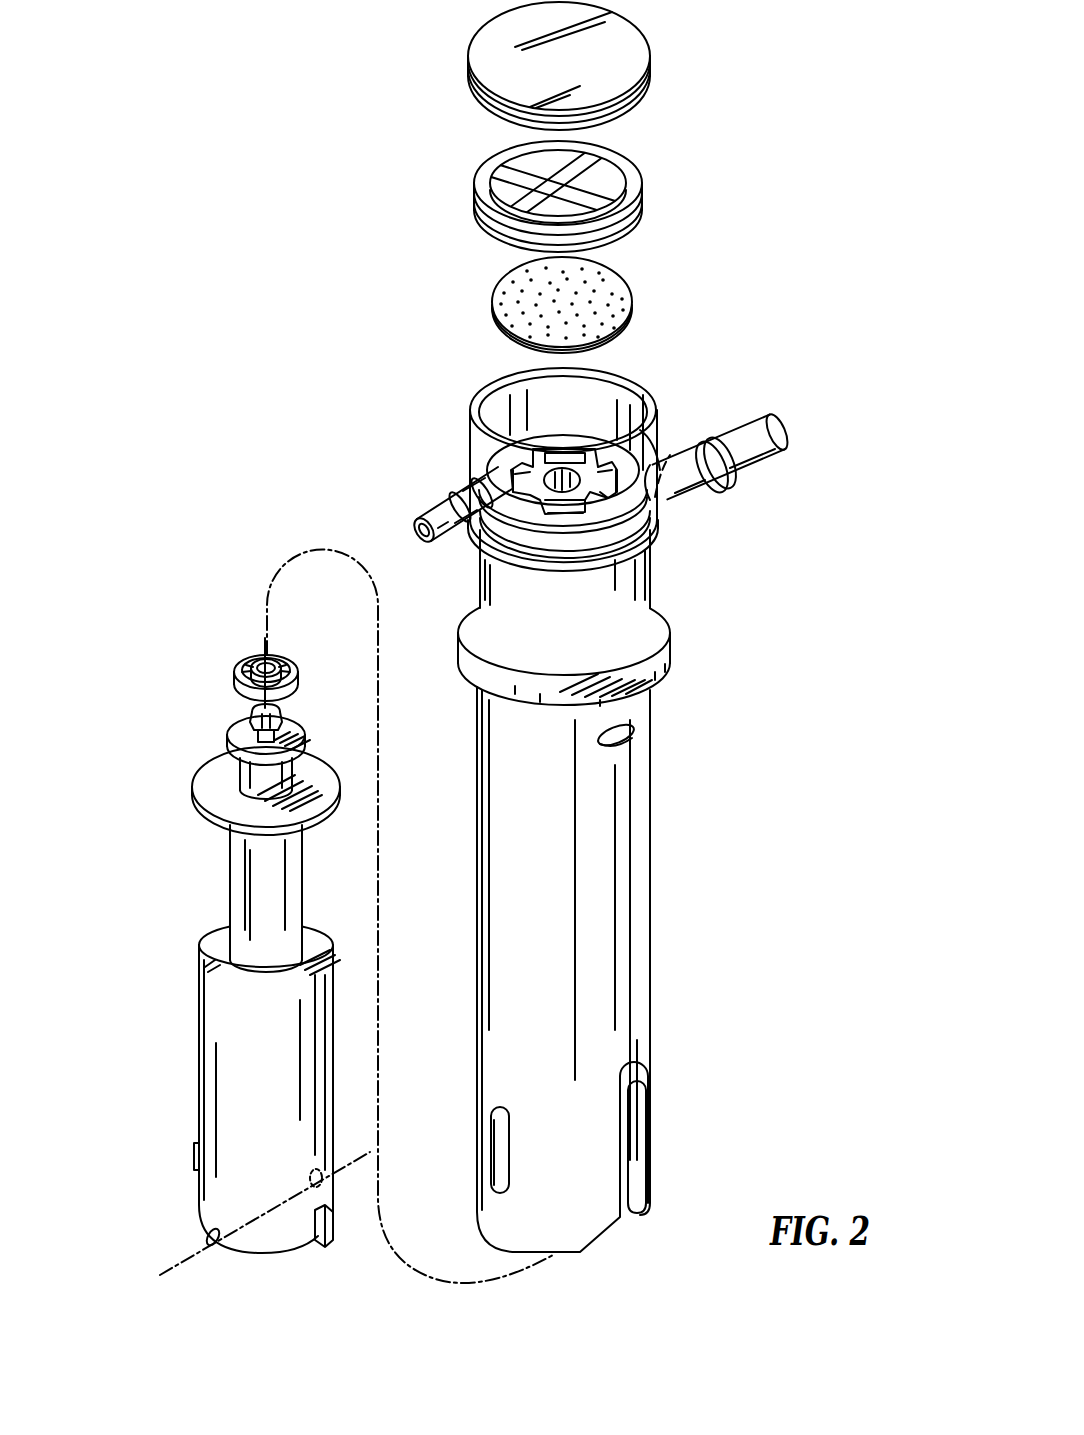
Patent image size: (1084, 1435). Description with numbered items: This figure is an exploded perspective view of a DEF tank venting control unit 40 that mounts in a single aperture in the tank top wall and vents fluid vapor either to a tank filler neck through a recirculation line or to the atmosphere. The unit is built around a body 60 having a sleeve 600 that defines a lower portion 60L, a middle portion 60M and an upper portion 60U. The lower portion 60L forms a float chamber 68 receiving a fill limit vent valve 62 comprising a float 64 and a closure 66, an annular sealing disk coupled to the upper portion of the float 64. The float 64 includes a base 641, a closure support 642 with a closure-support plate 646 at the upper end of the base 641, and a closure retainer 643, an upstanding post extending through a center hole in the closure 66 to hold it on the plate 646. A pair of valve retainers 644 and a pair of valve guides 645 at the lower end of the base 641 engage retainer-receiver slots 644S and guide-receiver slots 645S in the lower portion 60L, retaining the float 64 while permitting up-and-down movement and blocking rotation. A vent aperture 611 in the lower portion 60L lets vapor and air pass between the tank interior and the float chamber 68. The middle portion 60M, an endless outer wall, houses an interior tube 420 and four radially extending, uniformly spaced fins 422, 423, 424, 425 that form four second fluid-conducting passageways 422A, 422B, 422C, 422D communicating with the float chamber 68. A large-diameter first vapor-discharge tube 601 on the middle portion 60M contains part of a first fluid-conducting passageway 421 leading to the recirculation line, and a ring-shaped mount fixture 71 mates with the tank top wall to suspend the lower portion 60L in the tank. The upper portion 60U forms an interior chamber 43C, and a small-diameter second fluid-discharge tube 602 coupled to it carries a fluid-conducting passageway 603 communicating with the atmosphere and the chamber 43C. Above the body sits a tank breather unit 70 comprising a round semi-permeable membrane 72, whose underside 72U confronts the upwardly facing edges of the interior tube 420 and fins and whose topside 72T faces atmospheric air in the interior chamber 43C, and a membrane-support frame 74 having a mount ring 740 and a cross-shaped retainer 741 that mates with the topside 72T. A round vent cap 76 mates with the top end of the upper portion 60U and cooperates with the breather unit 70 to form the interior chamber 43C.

The DEF tank venting control unit 40 is at (350, 404).
The tank breather unit 70 is at (712, 233).
The vent cap 76 is at (618, 52).
The membrane-support frame 74 is at (652, 178).
The mount ring 740 is at (476, 200).
The cross-shaped retainer 741 is at (512, 180).
The semi-permeable membrane 72 is at (632, 284).
The topside 72T is at (515, 290).
The underside 72U is at (528, 343).
The body 60 is at (660, 733).
The upper portion 60U is at (668, 412).
The interior chamber 43C is at (520, 400).
The fin 424 is at (662, 428).
The fin 422 is at (544, 512).
The interior tube 420 is at (585, 448).
The fin 425 is at (573, 440).
The second fluid-conducting passageway 422A is at (578, 462).
The second fluid-conducting passageway 422B is at (520, 492).
The second fluid-conducting passageway 422C is at (568, 518).
The second fluid-conducting passageway 422D is at (607, 500).
The fin 423 is at (607, 495).
The second fluid-discharge tube 602 is at (433, 505).
The fluid-conducting passageway 603 is at (443, 550).
The first vapor-discharge tube 601 is at (762, 478).
The first fluid-conducting passageway 421 is at (670, 480).
The middle portion 60M is at (665, 568).
The mount fixture 71 is at (680, 650).
The lower portion 60L is at (655, 950).
The sleeve 600 is at (470, 933).
The first vent aperture 611 is at (600, 748).
The float chamber 68 is at (615, 872).
The retainer-receiver slot 644S is at (505, 1150).
The guide-receiver slot 645S is at (630, 1230).
The fill limit vent valve 62 is at (115, 900).
The closure 66 is at (218, 683).
The float 64 is at (185, 975).
The closure retainer 643 is at (290, 712).
The closure support 642 is at (222, 875).
The closure-support plate 646 is at (318, 815).
The base 641 is at (212, 1075).
The valve guide 645 is at (193, 1158).
The valve retainer 644 is at (322, 1170).